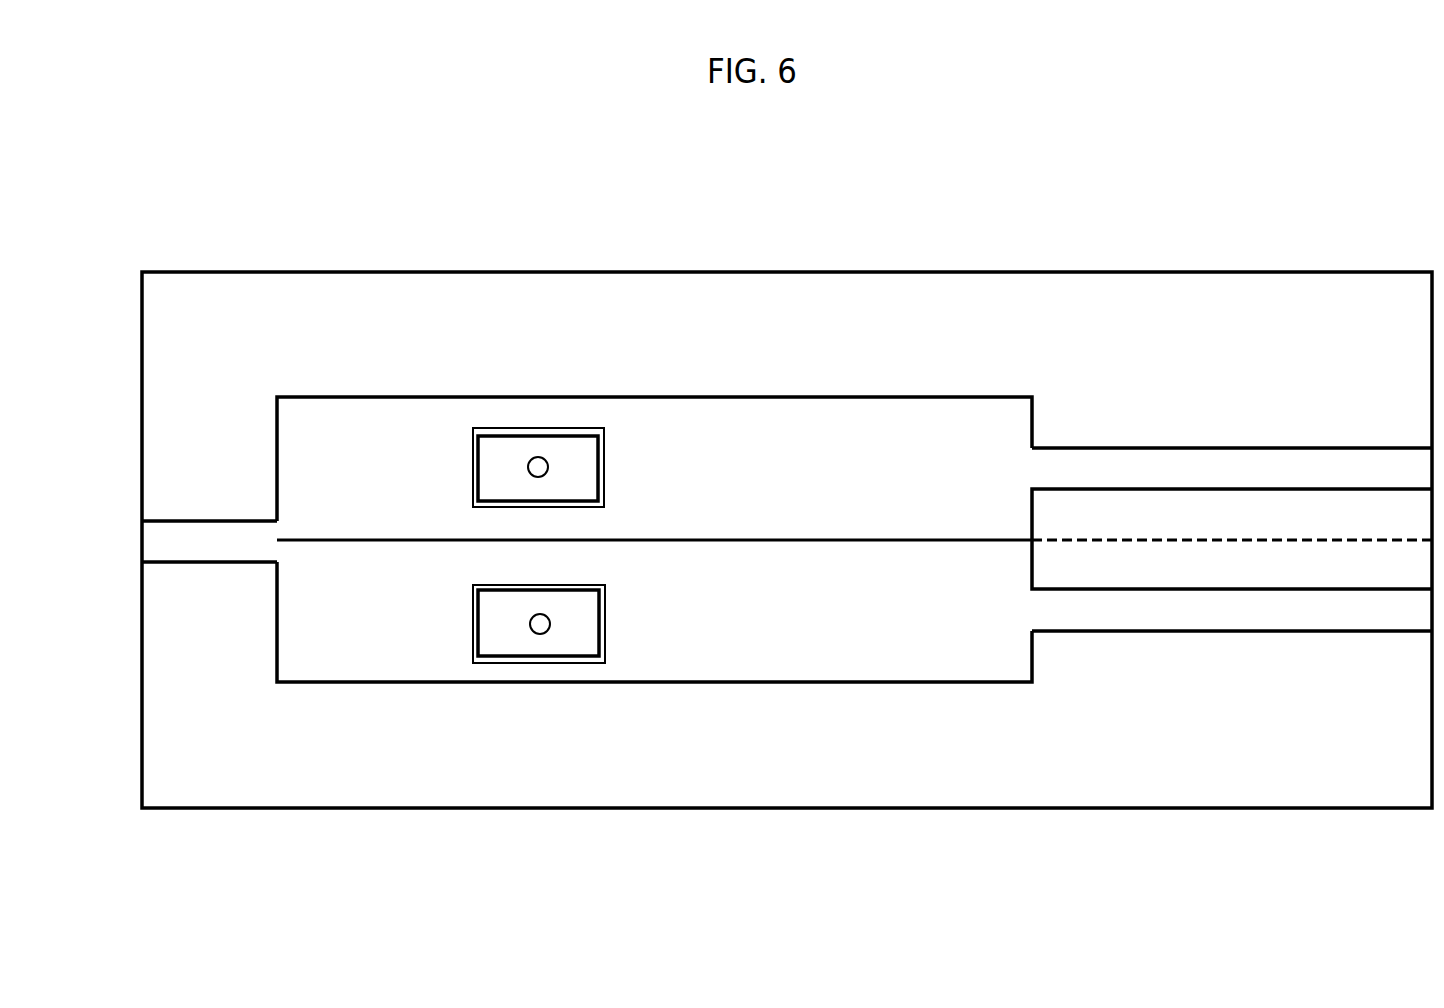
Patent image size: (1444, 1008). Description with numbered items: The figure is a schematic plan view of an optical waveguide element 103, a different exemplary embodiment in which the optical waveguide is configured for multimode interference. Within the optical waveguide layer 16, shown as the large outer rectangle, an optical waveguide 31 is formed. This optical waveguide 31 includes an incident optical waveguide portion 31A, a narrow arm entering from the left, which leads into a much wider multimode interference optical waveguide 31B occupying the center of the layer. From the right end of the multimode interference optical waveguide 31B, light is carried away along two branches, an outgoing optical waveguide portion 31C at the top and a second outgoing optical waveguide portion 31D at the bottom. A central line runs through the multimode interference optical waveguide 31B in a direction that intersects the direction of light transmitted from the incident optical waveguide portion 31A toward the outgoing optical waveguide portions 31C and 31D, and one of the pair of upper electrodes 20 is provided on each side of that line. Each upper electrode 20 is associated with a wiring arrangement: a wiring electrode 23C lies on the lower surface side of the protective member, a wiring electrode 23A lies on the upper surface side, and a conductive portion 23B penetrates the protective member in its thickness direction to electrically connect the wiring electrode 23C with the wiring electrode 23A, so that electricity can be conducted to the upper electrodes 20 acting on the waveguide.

The optical waveguide layer 16 is at (1222, 293).
The optical waveguide element 103 is at (1287, 210).
The optical waveguide 31 is at (751, 542).
The incident optical waveguide portion 31A is at (200, 549).
The multimode interference optical waveguide 31B is at (840, 420).
The outgoing optical waveguide portion 31C is at (1108, 460).
The outgoing optical waveguide portion 31D is at (1107, 622).
The upper electrode 20 is at (548, 428).
The wiring electrode 23A is at (590, 428).
The conductive portion 23B is at (548, 467).
The wiring electrode 23C is at (619, 541).